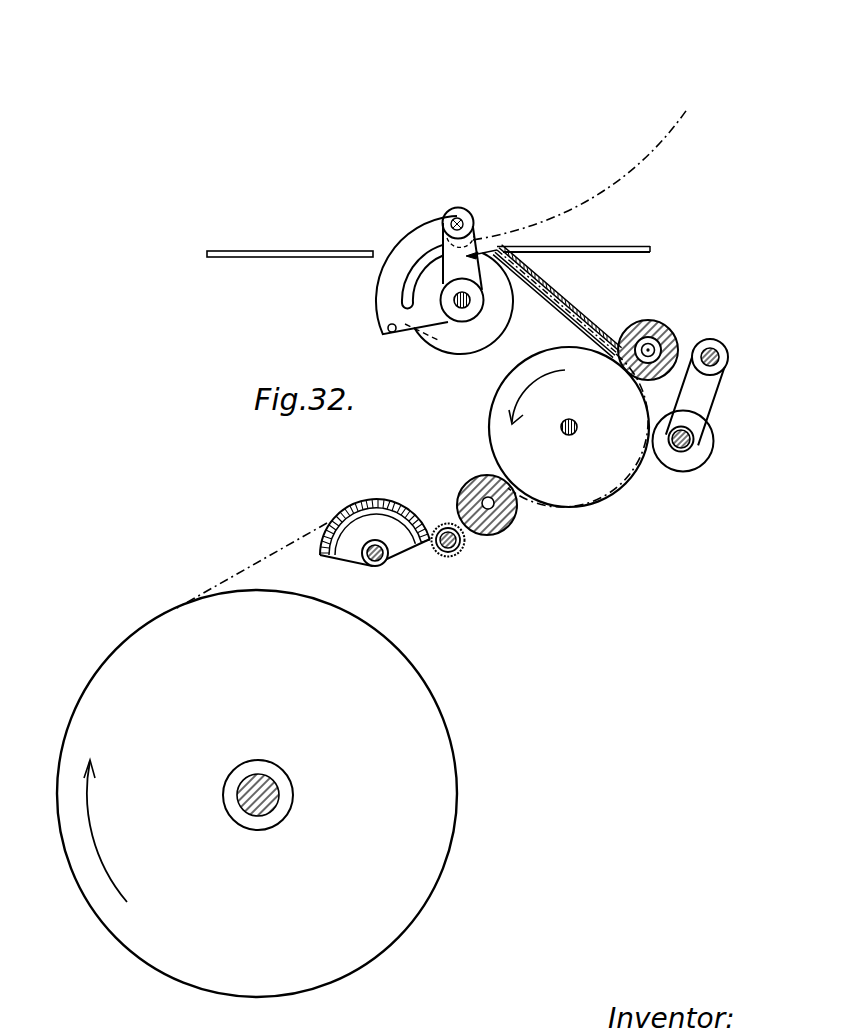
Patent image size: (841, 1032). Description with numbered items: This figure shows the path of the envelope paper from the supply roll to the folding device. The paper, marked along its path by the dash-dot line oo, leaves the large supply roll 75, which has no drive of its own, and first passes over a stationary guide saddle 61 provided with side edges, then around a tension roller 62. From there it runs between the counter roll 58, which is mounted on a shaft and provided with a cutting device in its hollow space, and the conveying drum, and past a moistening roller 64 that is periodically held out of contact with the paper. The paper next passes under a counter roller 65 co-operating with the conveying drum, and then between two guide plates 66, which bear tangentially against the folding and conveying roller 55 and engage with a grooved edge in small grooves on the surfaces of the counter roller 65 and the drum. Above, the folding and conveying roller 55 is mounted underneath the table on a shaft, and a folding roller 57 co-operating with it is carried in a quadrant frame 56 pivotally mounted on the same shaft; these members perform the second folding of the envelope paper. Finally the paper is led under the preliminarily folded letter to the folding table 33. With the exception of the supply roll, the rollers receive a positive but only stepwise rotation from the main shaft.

The folding table 33 is at (314, 251).
The folding and conveying roller 55 is at (508, 312).
The quadrant frame 56 is at (424, 230).
The folding roller 57 is at (474, 218).
The counter roll 58 is at (493, 526).
The guide saddle 61 is at (378, 564).
The tension roller 62 is at (452, 555).
The moistening roller 64 is at (690, 468).
The counter roller 65 is at (668, 337).
The guide plates 66 is at (546, 302).
The drum 75 is at (440, 714).
The web path oo is at (636, 184).